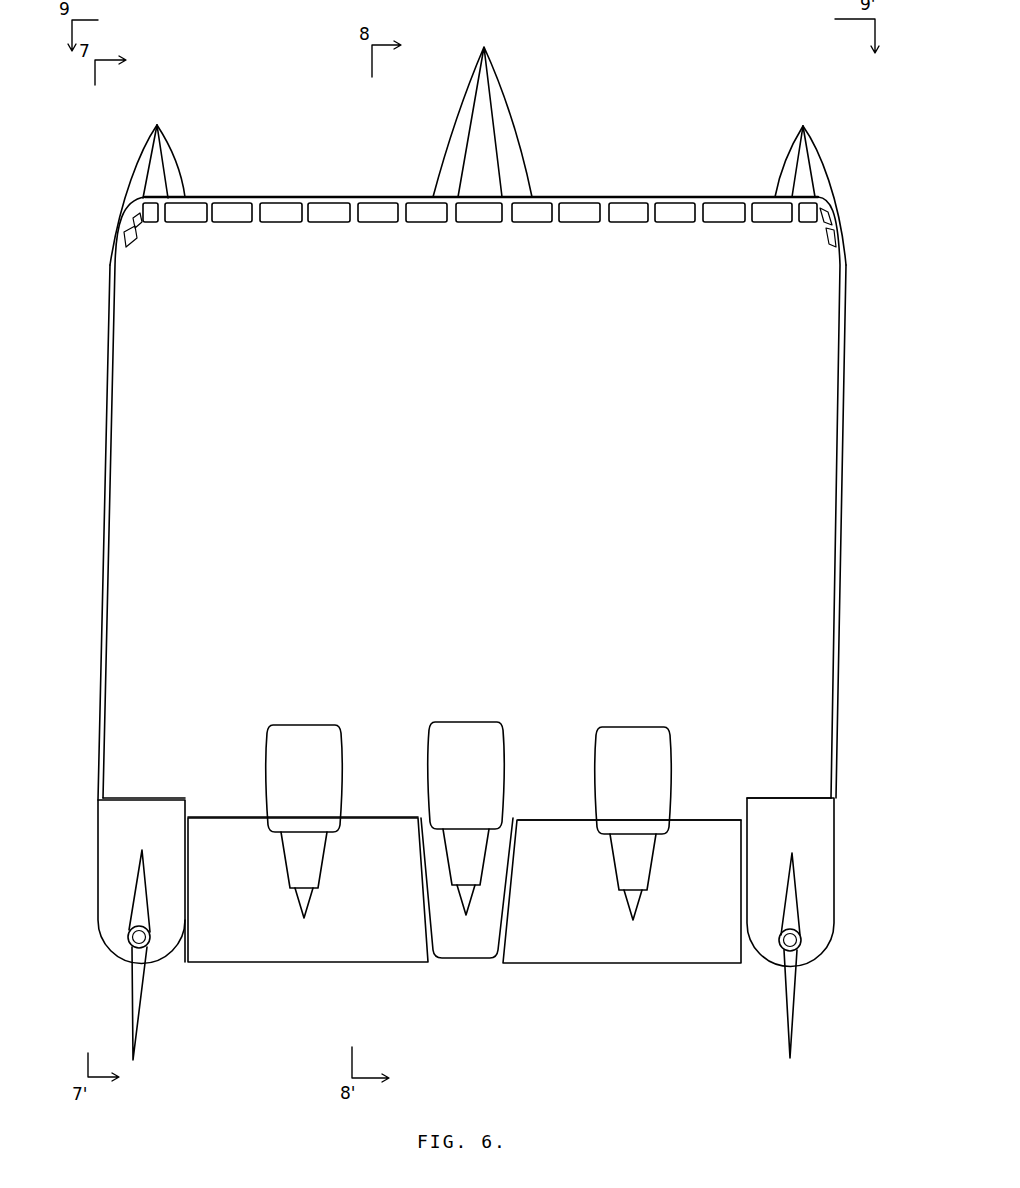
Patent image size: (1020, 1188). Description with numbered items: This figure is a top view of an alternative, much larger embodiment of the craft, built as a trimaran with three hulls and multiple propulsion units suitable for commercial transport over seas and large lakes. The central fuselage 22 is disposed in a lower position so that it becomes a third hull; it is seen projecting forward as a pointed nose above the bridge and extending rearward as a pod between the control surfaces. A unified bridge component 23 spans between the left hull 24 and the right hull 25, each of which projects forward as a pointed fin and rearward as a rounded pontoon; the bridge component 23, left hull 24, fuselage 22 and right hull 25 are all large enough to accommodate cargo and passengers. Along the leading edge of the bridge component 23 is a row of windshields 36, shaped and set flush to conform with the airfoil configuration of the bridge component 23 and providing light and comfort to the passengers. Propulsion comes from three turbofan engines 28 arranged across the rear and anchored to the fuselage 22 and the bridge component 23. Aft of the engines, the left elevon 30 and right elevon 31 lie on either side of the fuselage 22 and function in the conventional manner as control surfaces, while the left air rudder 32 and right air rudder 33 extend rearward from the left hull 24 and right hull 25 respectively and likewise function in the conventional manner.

The fuselage 22 is at (494, 156).
The bridge component 23 is at (486, 495).
The left hull 24 is at (130, 178).
The right hull 25 is at (832, 187).
The turbofan engines 28 is at (316, 780).
The left elevon 30 is at (261, 909).
The right elevon 31 is at (588, 915).
The left air rudder 32 is at (130, 1002).
The right air rudder 33 is at (797, 1015).
The windshields 36 is at (373, 208).